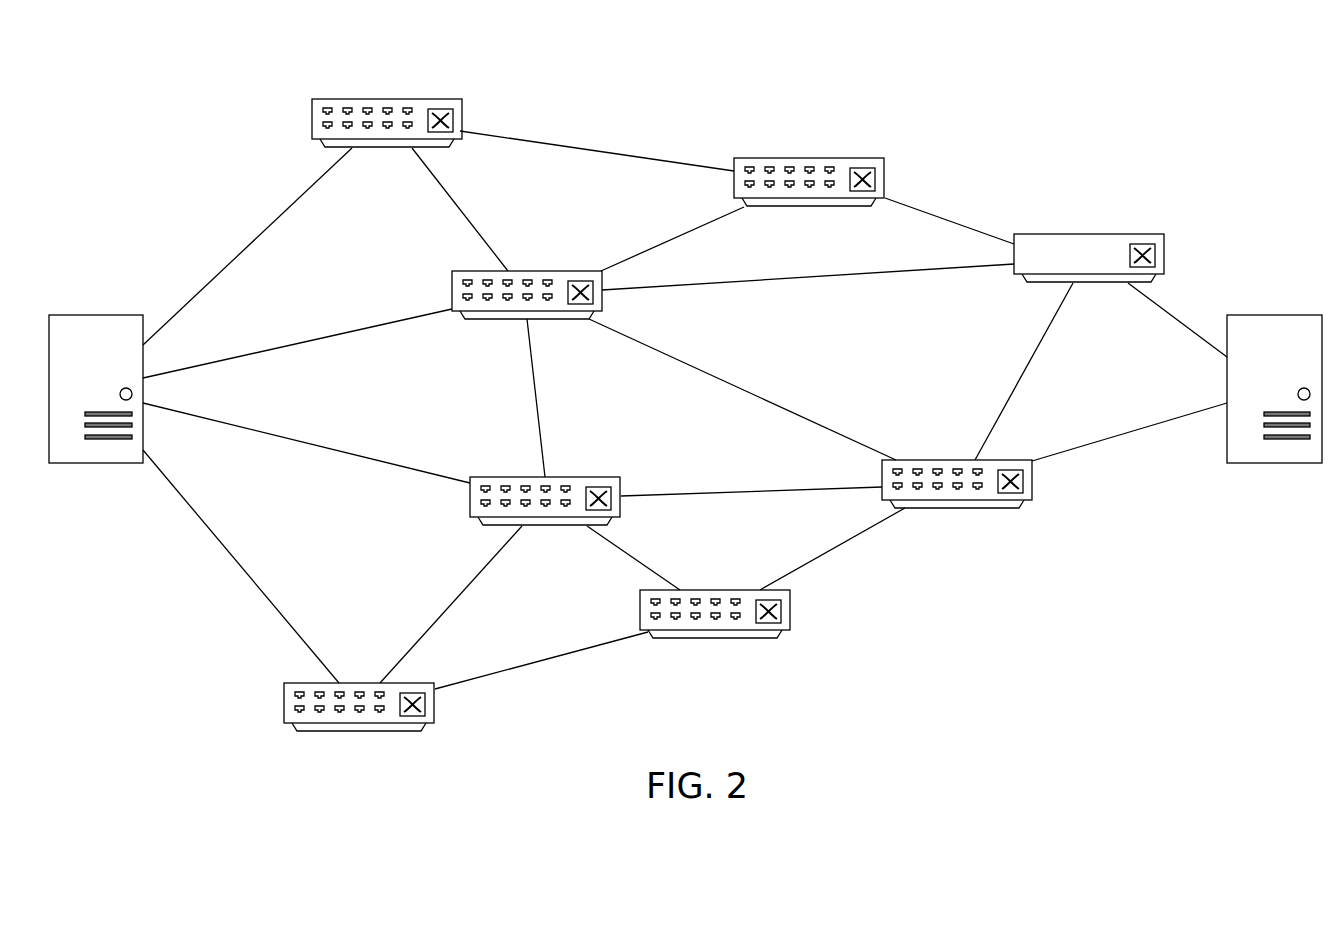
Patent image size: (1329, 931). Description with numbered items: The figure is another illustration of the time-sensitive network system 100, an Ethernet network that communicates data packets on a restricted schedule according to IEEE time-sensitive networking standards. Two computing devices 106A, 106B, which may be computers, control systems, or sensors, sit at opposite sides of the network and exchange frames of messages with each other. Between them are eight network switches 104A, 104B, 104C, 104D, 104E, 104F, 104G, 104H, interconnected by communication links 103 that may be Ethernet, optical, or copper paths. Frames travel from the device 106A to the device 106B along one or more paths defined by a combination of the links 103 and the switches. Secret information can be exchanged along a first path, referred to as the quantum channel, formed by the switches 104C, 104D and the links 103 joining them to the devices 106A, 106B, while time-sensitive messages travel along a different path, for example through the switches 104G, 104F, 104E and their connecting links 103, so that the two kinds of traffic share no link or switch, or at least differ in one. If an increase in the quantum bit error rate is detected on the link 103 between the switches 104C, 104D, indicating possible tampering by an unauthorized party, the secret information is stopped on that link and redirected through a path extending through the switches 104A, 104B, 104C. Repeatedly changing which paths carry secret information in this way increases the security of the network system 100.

The time-sensitive network system 100 is at (1110, 68).
The communication link 103 is at (300, 342).
The network switch 104A is at (392, 99).
The network switch 104B is at (811, 158).
The network switch 104C is at (1091, 234).
The network switch 104D is at (546, 271).
The network switch 104E is at (940, 460).
The network switch 104F is at (579, 477).
The network switch 104G is at (363, 683).
The network switch 104H is at (734, 590).
The computing device 106A is at (97, 315).
The computing device 106B is at (1277, 315).